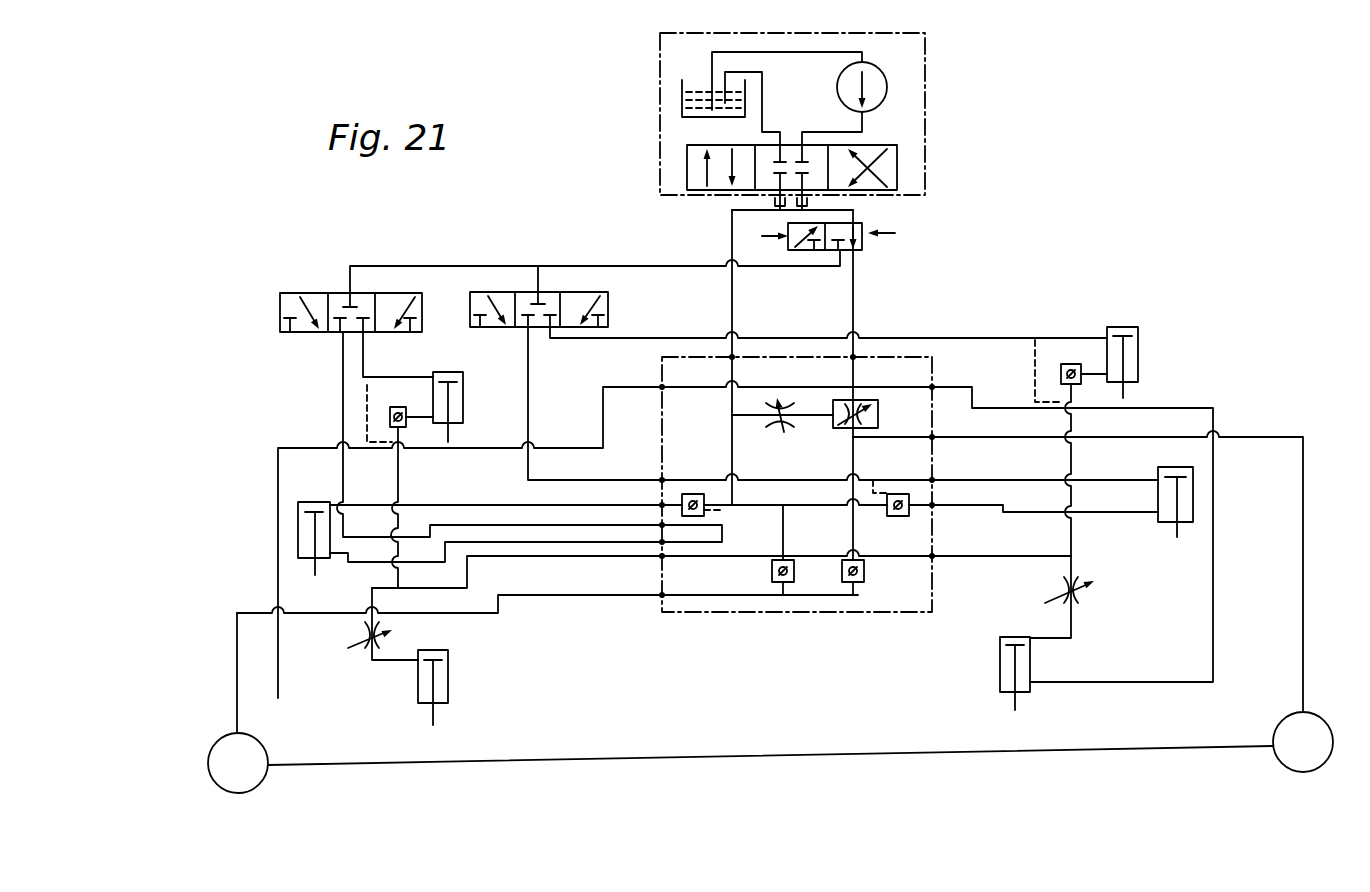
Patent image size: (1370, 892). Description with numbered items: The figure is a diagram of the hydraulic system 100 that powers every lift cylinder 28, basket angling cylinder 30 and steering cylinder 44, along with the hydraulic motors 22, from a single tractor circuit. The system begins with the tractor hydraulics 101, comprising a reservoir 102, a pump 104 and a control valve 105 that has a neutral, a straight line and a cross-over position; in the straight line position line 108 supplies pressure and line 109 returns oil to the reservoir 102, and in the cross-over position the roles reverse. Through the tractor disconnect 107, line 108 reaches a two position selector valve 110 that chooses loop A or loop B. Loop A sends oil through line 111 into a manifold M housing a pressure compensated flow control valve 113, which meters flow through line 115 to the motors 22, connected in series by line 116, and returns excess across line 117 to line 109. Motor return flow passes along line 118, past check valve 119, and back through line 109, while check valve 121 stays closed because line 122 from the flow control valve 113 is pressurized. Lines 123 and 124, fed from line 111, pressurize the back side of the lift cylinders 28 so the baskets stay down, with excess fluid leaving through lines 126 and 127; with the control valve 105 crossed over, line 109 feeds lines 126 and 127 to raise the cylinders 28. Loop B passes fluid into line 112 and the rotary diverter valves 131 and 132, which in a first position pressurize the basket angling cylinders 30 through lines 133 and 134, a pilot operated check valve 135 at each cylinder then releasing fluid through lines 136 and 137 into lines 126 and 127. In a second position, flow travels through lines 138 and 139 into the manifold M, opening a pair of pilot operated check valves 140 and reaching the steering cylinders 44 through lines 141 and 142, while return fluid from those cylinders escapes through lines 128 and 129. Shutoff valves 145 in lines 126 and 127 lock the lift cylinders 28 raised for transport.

The hydraulic system 100 is at (1114, 156).
The tractor hydraulics 101 is at (660, 142).
The reservoir 102 is at (682, 90).
The pump 104 is at (885, 82).
The control valve 105 is at (897, 170).
The tractor disconnect 107 is at (775, 201).
The line 108 is at (810, 209).
The line 109 is at (728, 226).
The two position selector valve 110 is at (856, 252).
The line 111 is at (854, 297).
The line 112 is at (758, 264).
The pressure compensated flow control valve 113 is at (882, 406).
The line 115 is at (960, 437).
The line 116 is at (782, 762).
The line 117 is at (768, 414).
The line 118 is at (545, 597).
The check valve 119 is at (772, 568).
The check valve 121 is at (866, 568).
The line 122 is at (853, 520).
The line 123 is at (958, 385).
The line 124 is at (548, 445).
The line 126 is at (992, 556).
The line 127 is at (514, 558).
The line 128 is at (942, 500).
The line 129 is at (432, 507).
The rotary diverter valve 131 is at (610, 310).
The rotary diverter valve 132 is at (280, 312).
The line 133 is at (936, 338).
The line 134 is at (364, 346).
The pilot operated check valve 135 is at (404, 393).
The line 136 is at (1074, 458).
The line 137 is at (402, 478).
The line 138 is at (530, 364).
The line 139 is at (352, 474).
The pilot operated check valve 140 is at (706, 507).
The line 141 is at (972, 480).
The line 142 is at (380, 566).
The shutoff valve 145 is at (362, 636).
The hydraulic motor 22 is at (262, 748).
The lift cylinder 28 is at (450, 678).
The basket angling cylinder 30 is at (465, 395).
The steering cylinder 44 is at (316, 478).
The manifold M is at (780, 613).